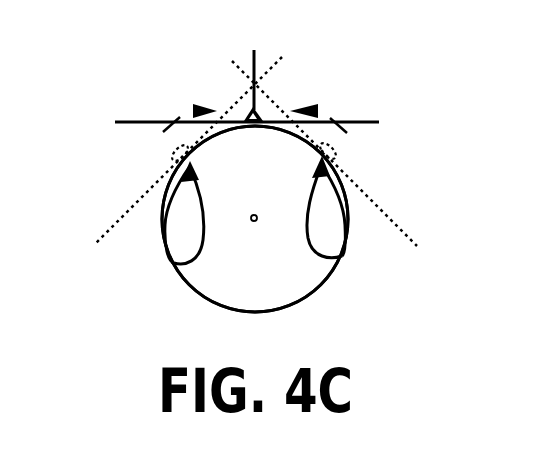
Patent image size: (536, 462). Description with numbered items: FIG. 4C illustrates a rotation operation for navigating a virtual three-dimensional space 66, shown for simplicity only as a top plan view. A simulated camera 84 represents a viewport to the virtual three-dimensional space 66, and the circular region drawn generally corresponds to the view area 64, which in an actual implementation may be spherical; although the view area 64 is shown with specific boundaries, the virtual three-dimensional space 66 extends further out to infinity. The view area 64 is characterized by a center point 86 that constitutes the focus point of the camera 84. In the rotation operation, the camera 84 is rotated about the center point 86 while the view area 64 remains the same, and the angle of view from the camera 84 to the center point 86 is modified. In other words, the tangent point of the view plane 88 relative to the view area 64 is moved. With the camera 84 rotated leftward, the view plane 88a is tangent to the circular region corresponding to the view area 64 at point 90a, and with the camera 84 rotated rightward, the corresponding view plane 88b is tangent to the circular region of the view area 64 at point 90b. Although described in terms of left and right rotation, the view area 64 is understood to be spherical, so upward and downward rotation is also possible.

The view area 64 is at (302, 298).
The virtual three-dimensional space 66 is at (271, 284).
The simulated camera 84 is at (252, 74).
The center point 86 is at (255, 214).
The view plane 88 is at (140, 121).
The view plane 88a is at (153, 143).
The right light portion 88b is at (358, 146).
The tangent point 90a is at (175, 263).
The tangent point 90b is at (342, 257).